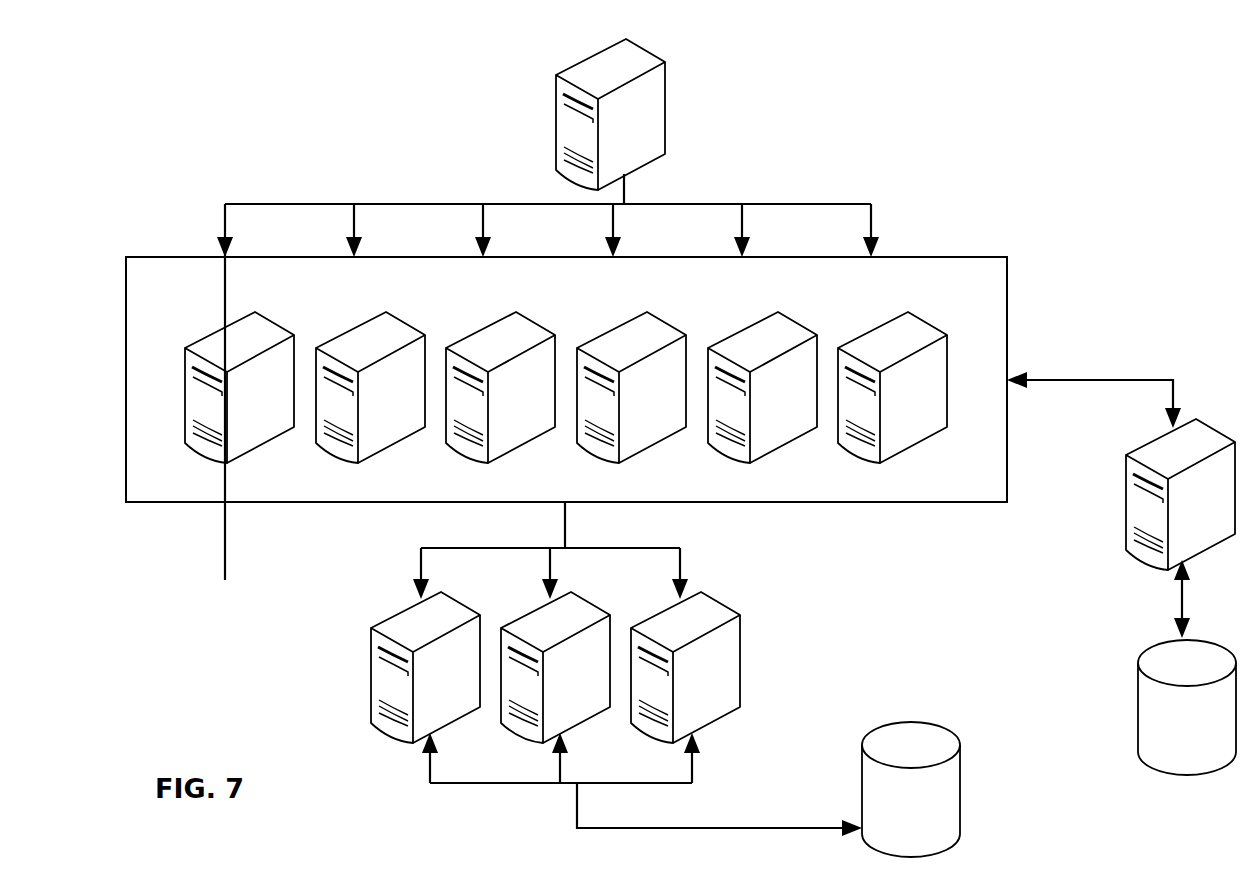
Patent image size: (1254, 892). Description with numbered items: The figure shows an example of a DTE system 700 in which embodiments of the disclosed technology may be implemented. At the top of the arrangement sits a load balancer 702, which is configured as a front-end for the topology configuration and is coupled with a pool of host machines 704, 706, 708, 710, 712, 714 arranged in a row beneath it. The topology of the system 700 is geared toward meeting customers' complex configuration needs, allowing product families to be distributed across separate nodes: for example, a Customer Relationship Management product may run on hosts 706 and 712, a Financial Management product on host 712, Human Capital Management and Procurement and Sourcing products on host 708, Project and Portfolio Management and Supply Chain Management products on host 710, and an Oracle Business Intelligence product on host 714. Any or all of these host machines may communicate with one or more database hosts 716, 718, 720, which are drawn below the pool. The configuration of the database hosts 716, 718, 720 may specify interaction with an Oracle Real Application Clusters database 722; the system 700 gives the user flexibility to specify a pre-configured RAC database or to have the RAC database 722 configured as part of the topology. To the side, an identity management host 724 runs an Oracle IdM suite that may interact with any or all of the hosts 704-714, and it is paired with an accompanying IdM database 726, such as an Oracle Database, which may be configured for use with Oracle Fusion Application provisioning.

The DTE system 700 is at (1182, 119).
The load balancer 702 is at (600, 55).
The host machine 704 is at (232, 330).
The host machine 706 is at (363, 330).
The host machine 708 is at (493, 330).
The host machine 710 is at (624, 330).
The host machine 712 is at (755, 330).
The host machine 714 is at (885, 330).
The database host 716 is at (418, 610).
The database host 718 is at (548, 610).
The database host 720 is at (678, 610).
The RAC database 722 is at (882, 732).
The identity management host 724 is at (1168, 437).
The IdM database 726 is at (1158, 650).